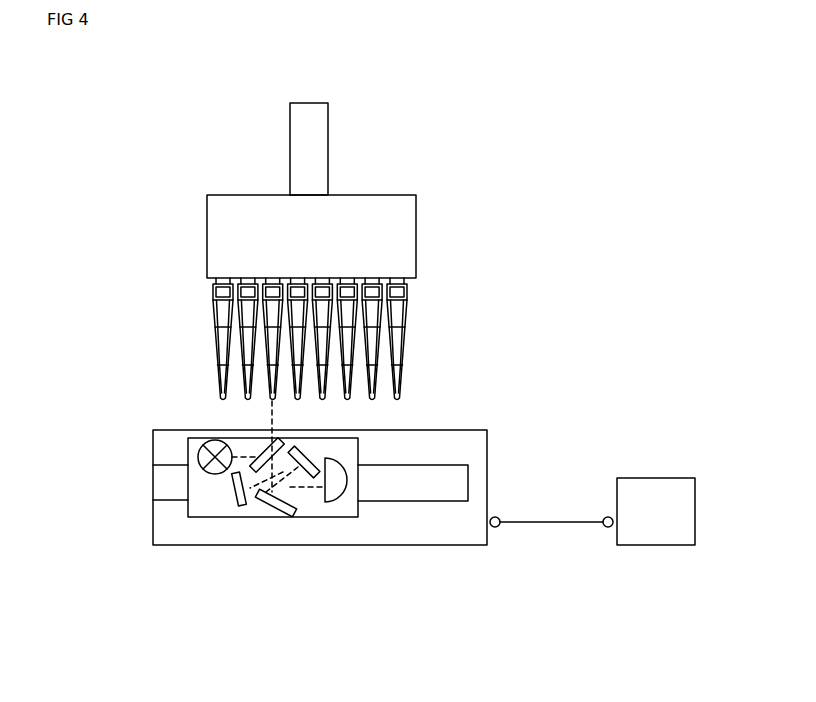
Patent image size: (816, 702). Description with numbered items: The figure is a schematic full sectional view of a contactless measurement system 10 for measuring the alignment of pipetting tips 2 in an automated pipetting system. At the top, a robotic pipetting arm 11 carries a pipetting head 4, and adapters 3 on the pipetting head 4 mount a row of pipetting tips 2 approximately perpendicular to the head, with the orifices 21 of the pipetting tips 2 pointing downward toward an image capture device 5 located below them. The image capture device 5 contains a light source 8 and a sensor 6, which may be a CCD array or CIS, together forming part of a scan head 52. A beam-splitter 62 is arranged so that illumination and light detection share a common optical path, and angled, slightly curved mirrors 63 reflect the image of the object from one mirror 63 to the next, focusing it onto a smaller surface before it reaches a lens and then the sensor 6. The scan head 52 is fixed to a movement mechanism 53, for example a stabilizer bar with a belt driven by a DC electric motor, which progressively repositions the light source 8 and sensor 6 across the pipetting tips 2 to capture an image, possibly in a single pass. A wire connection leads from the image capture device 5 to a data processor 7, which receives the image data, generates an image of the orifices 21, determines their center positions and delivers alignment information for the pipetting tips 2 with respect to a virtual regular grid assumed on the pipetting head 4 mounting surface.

The contactless measurement system 10 is at (147, 150).
The robotic pipetting arm 11 is at (317, 142).
The pipetting head 4 is at (375, 233).
The adapter 3 is at (407, 287).
The pipetting tip 2 is at (312, 324).
The orifice 21 is at (223, 404).
The image capture device 5 is at (363, 482).
The scan head 52 is at (312, 506).
The movement mechanism 53 is at (402, 488).
The light source 8 is at (207, 483).
The beam-splitter 62 is at (278, 453).
The mirror 63 is at (243, 505).
The sensor 6 is at (336, 484).
The data processor 7 is at (642, 498).